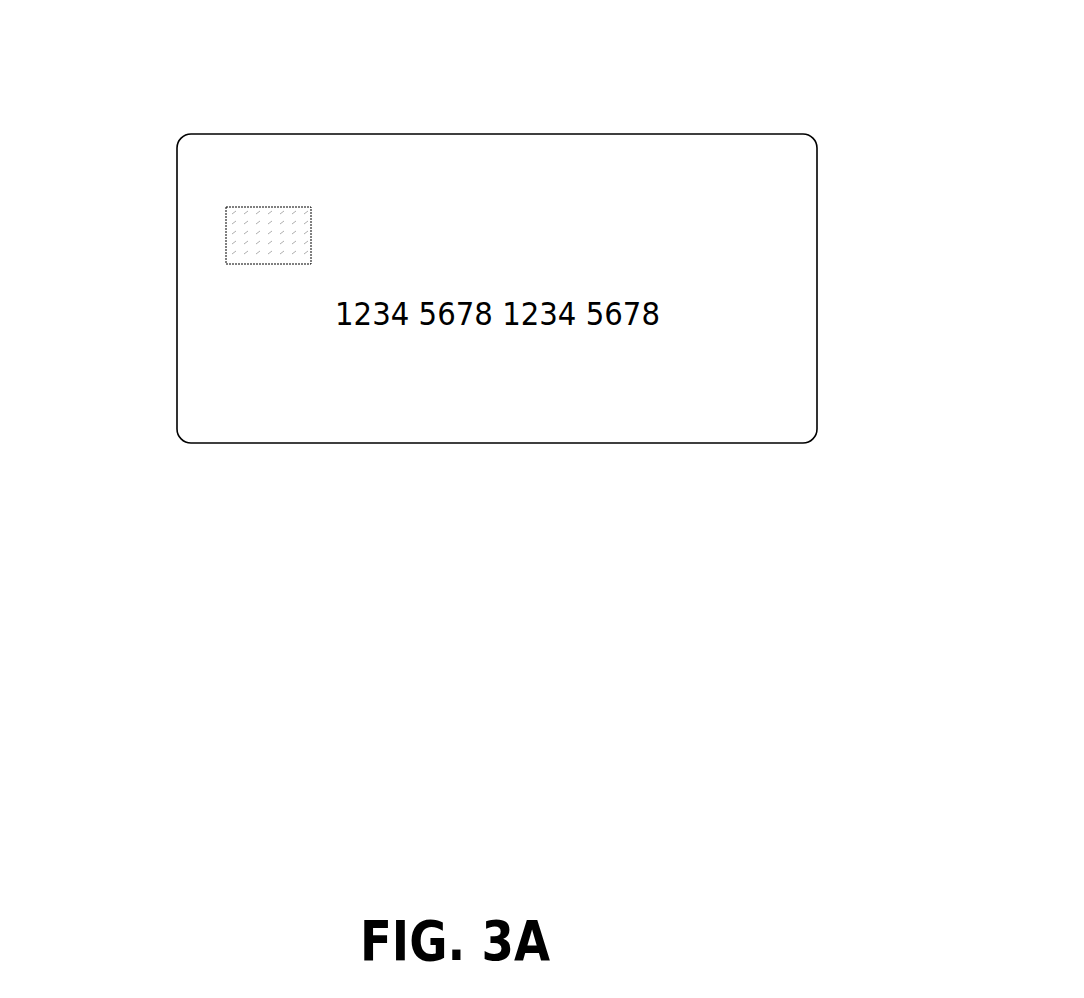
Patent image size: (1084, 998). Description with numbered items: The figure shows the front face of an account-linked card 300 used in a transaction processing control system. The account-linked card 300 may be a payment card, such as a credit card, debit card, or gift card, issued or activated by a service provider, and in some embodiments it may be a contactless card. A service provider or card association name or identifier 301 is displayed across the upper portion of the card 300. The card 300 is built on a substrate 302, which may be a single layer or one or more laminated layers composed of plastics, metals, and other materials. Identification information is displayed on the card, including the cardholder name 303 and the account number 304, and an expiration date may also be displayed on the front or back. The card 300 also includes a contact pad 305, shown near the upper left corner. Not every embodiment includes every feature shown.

The account-linked card 300 is at (520, 736).
The service provider or card association name or identifier 301 is at (725, 151).
The substrate 302 is at (756, 250).
The cardholder name 303 is at (198, 384).
The account number 304 is at (232, 422).
The contact pad 305 is at (241, 203).